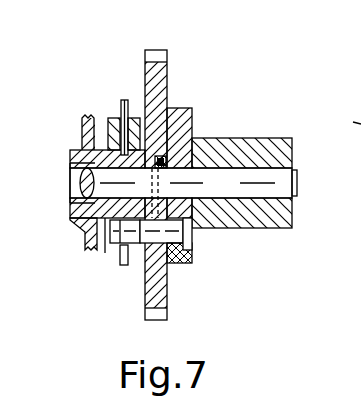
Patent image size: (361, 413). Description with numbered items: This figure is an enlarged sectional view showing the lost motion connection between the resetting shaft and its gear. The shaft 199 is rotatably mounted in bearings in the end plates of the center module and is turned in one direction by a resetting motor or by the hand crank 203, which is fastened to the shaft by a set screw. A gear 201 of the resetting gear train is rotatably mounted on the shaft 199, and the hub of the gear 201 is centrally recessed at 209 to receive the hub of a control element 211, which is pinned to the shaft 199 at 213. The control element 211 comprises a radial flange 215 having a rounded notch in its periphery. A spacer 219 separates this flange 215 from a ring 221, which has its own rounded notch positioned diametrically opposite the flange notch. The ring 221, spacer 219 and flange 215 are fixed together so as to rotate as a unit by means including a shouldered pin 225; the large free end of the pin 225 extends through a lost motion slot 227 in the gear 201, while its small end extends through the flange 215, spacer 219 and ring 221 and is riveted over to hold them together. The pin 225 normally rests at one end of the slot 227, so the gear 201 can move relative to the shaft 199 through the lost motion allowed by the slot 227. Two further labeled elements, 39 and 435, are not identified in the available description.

The flange 39 is at (82, 135).
The shaft 199 is at (296, 167).
The gear 201 is at (168, 68).
The hand crank 203 is at (270, 138).
The central recess of gear hub 209 is at (193, 135).
The control element 211 is at (108, 262).
The pin connection 213 is at (160, 156).
The radial flange 215 is at (114, 120).
The spacer 219 is at (124, 100).
The ring 221 is at (135, 117).
The shouldered pin 225 is at (190, 260).
The lost motion slot 227 is at (187, 235).
The member 435 is at (353, 122).